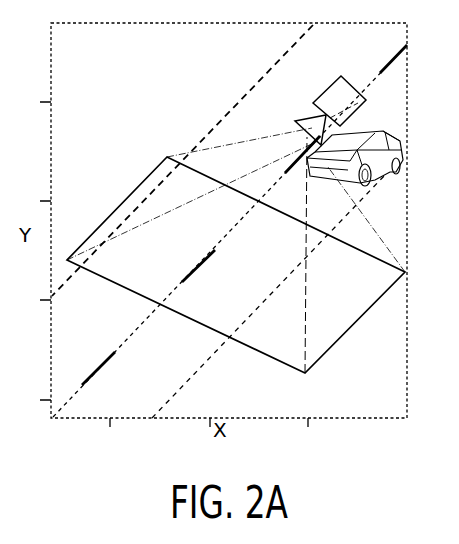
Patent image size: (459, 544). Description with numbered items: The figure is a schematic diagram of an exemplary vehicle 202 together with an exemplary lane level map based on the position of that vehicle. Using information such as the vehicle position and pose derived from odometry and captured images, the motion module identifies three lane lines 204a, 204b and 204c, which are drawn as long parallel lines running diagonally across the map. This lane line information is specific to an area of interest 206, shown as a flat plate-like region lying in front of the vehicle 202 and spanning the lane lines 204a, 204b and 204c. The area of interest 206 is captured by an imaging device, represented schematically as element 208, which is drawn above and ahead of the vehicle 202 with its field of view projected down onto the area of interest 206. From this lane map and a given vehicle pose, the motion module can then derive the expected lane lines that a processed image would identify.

The vehicle 202 is at (382, 137).
The lane line 204a is at (203, 145).
The lane line 204b is at (197, 269).
The lane line 204c is at (193, 376).
The area of interest 206 is at (115, 208).
The imaging device 208 is at (325, 89).